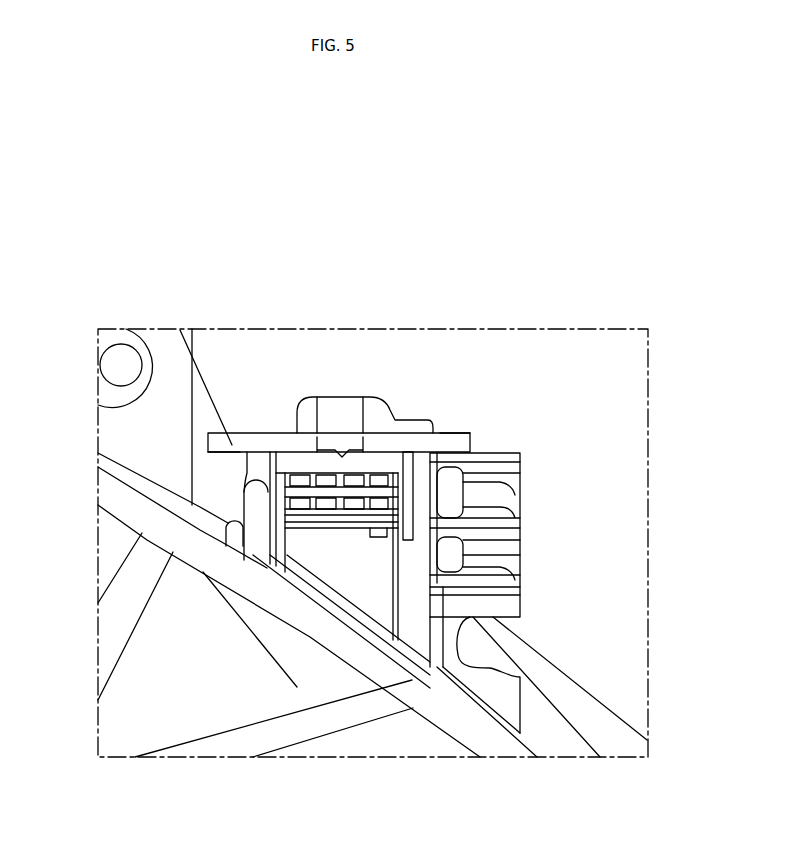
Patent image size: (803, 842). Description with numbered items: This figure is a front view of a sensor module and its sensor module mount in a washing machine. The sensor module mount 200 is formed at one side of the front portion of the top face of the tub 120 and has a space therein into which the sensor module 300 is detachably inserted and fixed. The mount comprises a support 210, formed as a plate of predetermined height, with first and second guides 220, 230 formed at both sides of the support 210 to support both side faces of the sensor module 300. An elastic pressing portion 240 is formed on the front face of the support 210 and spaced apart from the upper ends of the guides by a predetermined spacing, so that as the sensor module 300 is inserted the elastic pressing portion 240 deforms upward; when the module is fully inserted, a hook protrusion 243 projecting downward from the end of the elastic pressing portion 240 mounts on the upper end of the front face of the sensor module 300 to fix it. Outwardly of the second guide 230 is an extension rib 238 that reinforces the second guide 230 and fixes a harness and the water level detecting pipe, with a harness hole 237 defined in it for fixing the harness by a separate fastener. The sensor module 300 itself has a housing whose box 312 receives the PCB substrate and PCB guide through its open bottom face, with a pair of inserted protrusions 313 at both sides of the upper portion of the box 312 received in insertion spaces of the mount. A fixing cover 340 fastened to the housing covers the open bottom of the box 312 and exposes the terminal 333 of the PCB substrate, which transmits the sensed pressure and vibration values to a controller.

The tub 120 is at (123, 503).
The sensor module mount 200 is at (365, 394).
The support 210 is at (368, 565).
The first guide 220 is at (257, 505).
The second guide 230 is at (413, 640).
The harness hole 237 is at (452, 546).
The extension rib 238 is at (510, 580).
The elastic pressing portion 240 is at (303, 410).
The hook protrusion 243 is at (325, 410).
The sensor module 300 is at (472, 440).
The box 312 is at (287, 440).
The inserted protrusions 313 is at (225, 427).
The terminal 333 is at (383, 493).
The fixing cover 340 is at (300, 530).